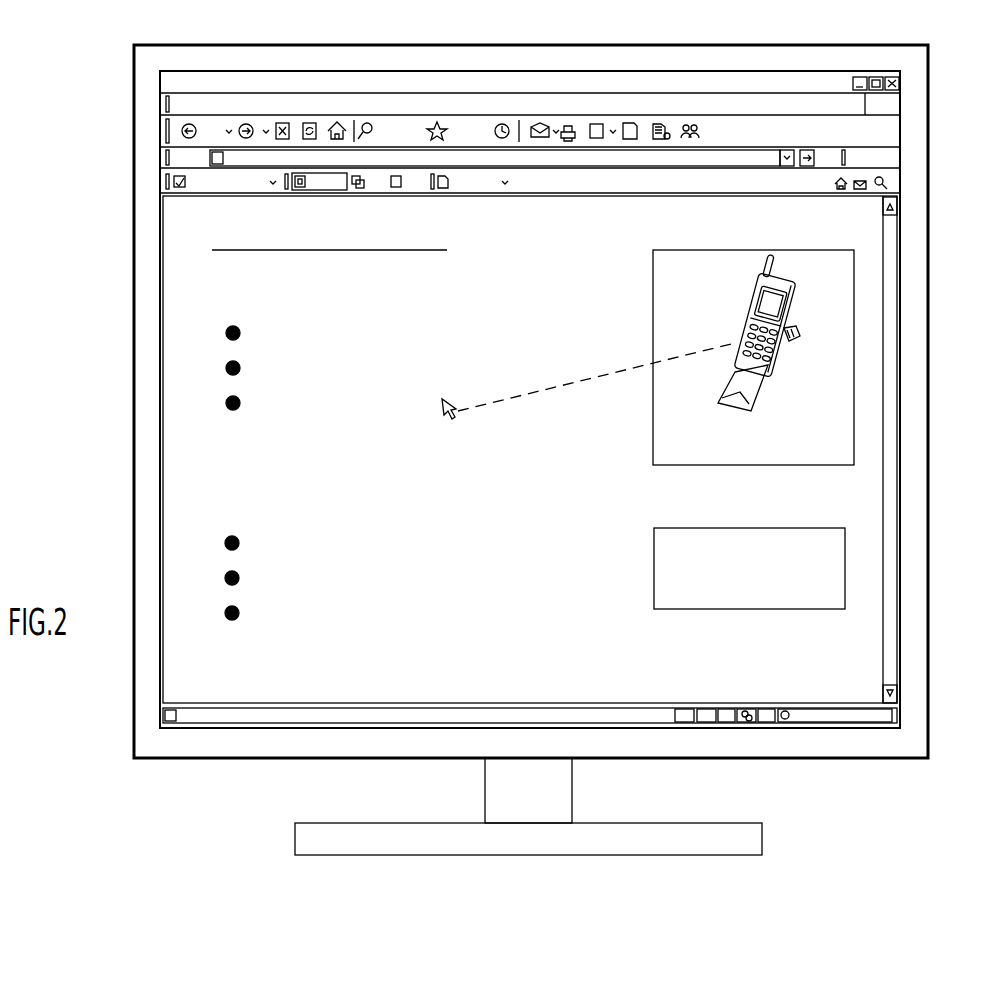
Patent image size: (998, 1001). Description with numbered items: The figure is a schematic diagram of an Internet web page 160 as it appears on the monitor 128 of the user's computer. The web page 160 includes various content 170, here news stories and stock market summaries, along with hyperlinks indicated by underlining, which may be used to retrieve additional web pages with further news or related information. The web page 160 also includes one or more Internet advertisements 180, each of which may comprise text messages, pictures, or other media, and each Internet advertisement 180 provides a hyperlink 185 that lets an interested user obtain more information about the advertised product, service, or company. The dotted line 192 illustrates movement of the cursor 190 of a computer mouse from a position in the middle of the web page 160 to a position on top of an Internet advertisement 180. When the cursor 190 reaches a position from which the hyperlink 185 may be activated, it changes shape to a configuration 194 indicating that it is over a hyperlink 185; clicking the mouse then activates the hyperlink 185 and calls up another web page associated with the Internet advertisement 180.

The monitor 128 is at (782, 760).
The Internet web page 160 is at (608, 708).
The content 170 is at (447, 248).
The Internet advertisement 180 is at (737, 466).
The hyperlink 185 is at (768, 424).
The cursor 190 is at (457, 422).
The dotted line 192 is at (610, 375).
The configuration 194 is at (797, 342).